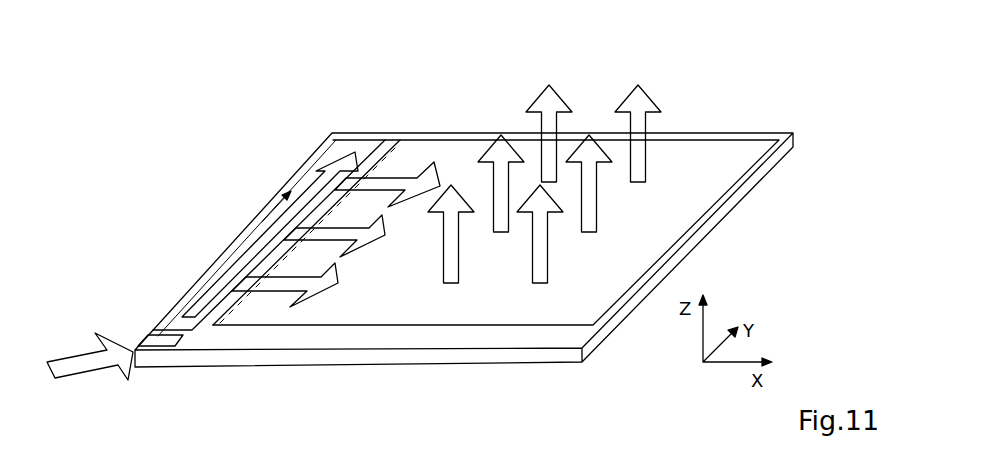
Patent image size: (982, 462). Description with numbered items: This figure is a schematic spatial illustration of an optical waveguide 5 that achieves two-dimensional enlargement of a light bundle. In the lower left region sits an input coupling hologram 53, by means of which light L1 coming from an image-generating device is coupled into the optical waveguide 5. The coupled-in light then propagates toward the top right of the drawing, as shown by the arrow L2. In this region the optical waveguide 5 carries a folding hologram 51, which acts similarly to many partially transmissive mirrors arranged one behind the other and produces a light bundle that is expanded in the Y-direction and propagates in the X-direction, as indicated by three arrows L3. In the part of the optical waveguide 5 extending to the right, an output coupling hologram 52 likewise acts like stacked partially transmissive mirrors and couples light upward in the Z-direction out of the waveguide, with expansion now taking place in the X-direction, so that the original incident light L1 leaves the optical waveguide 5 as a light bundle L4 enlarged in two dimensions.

The optical waveguide 5 is at (793, 133).
The folding hologram 51 is at (332, 137).
The output coupling hologram 52 is at (508, 317).
The input coupling hologram 53 is at (165, 343).
The light L1 is at (88, 370).
The arrow L2 is at (267, 233).
The arrows L3 is at (408, 175).
The light bundle L4 is at (551, 107).